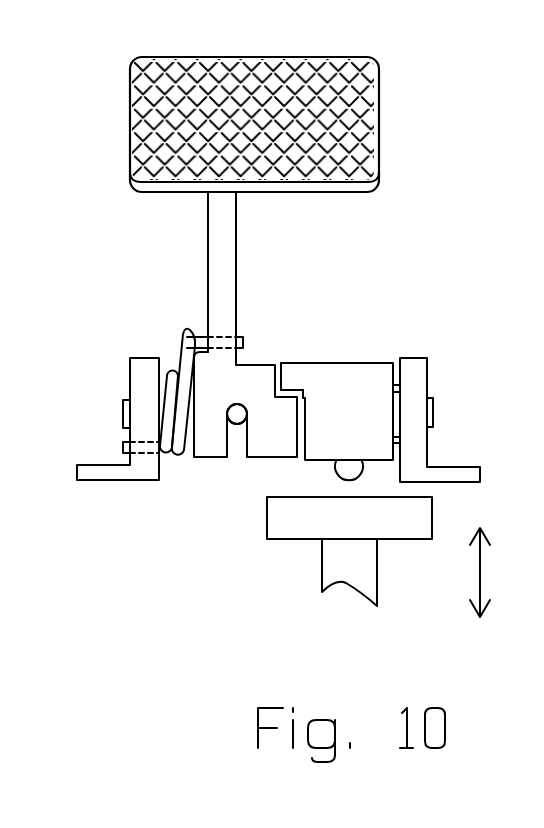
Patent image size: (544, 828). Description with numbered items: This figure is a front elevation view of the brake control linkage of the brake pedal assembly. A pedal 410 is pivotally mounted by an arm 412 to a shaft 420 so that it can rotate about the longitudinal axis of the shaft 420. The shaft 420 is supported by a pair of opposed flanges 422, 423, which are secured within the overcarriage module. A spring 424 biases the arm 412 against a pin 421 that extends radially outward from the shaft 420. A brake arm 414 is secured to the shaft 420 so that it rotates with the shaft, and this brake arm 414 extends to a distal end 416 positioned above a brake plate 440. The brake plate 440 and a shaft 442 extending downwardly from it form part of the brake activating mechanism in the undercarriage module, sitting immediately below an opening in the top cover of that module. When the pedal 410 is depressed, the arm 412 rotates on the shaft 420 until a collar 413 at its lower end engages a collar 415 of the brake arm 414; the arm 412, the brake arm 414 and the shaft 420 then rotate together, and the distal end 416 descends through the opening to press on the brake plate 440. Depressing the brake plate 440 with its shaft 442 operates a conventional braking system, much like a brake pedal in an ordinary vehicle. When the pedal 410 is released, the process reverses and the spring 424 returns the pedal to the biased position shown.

The pedal 410 is at (378, 95).
The arm 412 is at (222, 235).
The collar 413 is at (283, 427).
The brake arm 414 is at (378, 372).
The collar 415 is at (298, 373).
The distal end 416 is at (348, 478).
The shaft 420 is at (435, 410).
The pin 421 is at (238, 418).
The flange 422 is at (140, 373).
The flange 423 is at (420, 375).
The spring 424 is at (187, 334).
The brake plate 440 is at (283, 528).
The shaft 442 is at (333, 570).